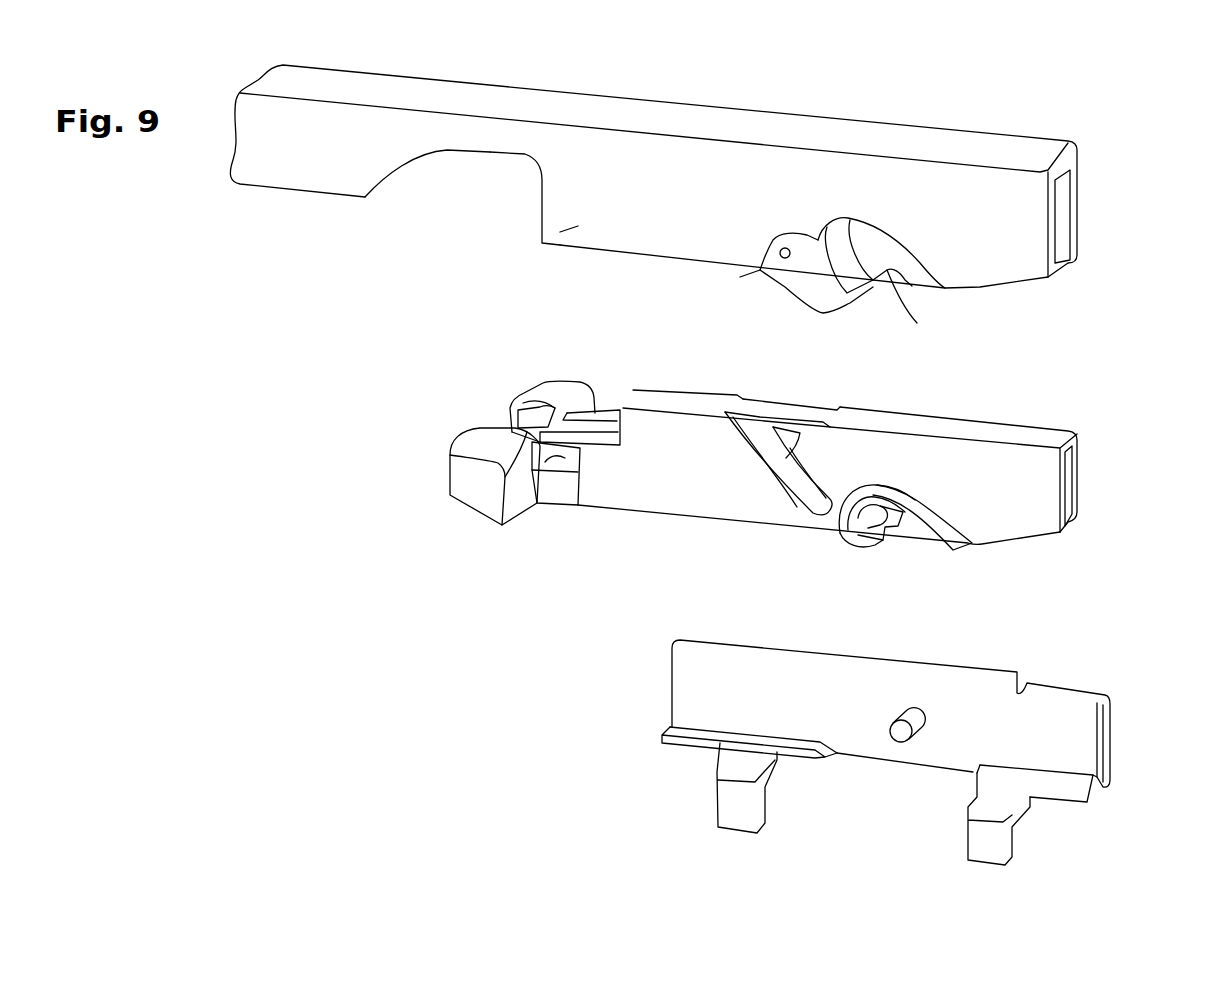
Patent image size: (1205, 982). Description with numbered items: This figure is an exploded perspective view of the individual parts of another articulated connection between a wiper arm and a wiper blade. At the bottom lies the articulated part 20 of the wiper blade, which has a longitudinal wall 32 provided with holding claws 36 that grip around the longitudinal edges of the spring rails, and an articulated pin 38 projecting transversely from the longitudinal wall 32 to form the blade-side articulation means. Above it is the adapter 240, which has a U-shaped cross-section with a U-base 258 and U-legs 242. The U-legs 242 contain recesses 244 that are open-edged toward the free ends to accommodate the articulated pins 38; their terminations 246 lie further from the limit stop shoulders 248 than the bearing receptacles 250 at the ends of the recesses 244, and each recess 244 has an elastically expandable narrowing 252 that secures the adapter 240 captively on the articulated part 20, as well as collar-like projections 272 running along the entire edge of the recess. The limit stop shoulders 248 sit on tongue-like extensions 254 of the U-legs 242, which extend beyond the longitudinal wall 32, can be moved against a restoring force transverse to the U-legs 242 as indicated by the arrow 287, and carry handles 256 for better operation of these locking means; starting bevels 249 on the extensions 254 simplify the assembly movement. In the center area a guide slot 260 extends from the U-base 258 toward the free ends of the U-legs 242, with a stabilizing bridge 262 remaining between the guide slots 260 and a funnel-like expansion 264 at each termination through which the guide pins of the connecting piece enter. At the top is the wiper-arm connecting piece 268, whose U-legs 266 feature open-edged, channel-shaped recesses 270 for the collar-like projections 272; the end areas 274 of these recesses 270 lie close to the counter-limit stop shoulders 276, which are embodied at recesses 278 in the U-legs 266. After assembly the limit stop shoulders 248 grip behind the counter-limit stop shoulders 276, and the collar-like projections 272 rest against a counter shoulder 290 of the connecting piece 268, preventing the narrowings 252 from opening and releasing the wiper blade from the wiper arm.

The articulated part 20 is at (658, 722).
The longitudinal wall 32 is at (697, 665).
The holding claws 36 is at (743, 812).
The articulated pin 38 is at (902, 750).
The adapter 240 is at (1014, 406).
The U-legs 242 is at (685, 495).
The recesses 244 is at (930, 556).
The terminations 246 is at (935, 558).
The limit stop shoulders 248 is at (570, 488).
The starting bevels 249 is at (550, 463).
The bearing receptacles 250 is at (853, 537).
The narrowing 252 is at (885, 545).
The tongue-like extensions 254 is at (612, 415).
The handles 256 is at (583, 403).
The U-base 258 is at (1052, 437).
The guide slot 260 is at (768, 508).
The stabilizing bridge 262 is at (800, 405).
The funnel-like expansion 264 is at (767, 413).
The U-legs 266 is at (580, 227).
The connecting piece 268 is at (952, 114).
The recesses 270 is at (920, 287).
The collar-like projections 272 is at (827, 533).
The end areas 274 is at (770, 268).
The counter-limit stop shoulders 276 is at (540, 212).
The recesses 278 is at (430, 178).
The arrow 287 is at (589, 368).
The counter shoulder 290 is at (888, 272).